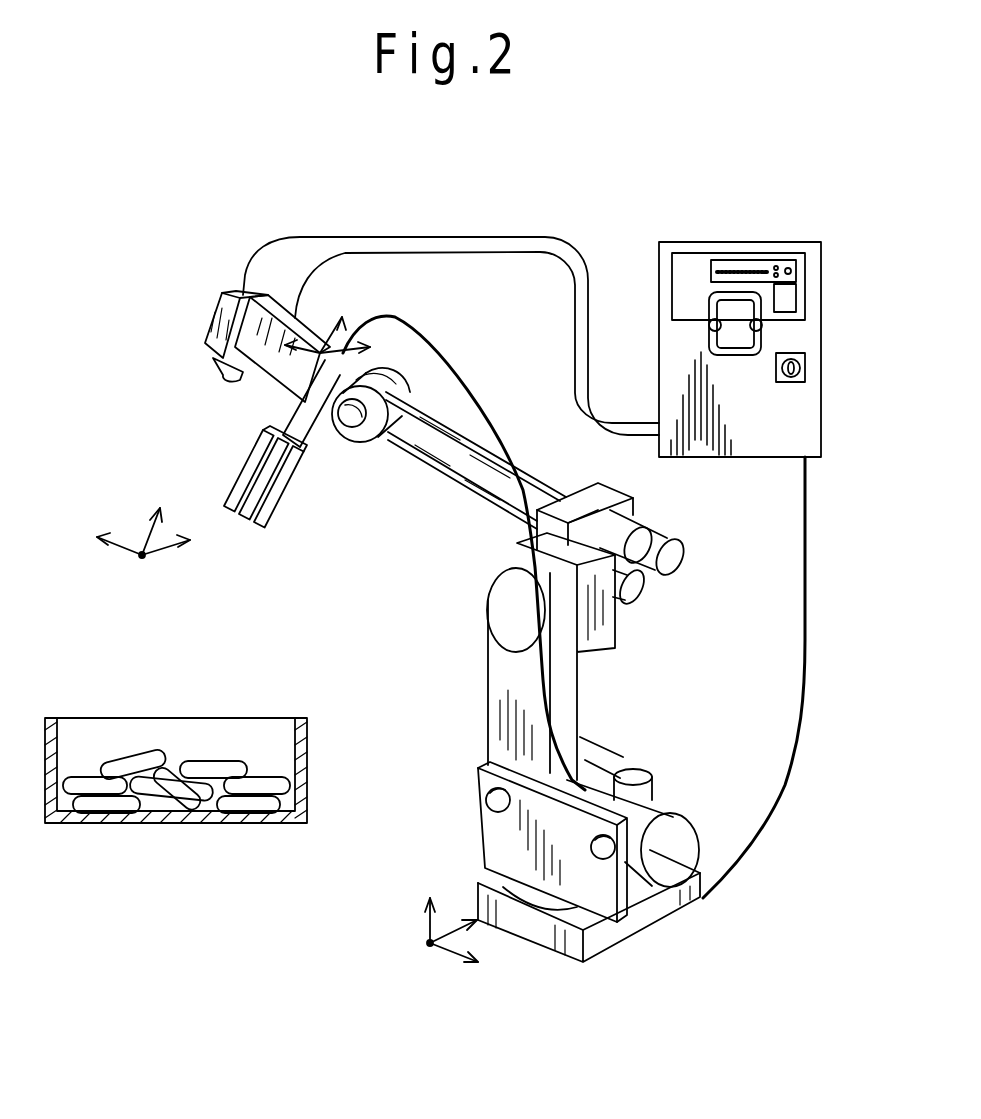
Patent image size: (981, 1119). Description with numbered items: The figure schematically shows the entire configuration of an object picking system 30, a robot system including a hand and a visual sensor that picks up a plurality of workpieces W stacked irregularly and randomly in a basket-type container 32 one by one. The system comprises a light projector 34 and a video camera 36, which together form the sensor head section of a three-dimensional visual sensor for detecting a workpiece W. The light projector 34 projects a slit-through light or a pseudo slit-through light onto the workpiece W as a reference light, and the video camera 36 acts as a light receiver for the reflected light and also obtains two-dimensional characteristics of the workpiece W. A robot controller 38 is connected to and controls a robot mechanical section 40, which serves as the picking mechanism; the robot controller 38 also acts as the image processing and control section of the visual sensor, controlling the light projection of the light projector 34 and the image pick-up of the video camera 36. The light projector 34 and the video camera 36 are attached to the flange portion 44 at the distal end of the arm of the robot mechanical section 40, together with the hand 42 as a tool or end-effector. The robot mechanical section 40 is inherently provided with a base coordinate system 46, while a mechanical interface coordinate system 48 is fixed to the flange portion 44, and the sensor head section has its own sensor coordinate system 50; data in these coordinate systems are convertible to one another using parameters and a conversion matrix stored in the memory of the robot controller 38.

The object picking system 30 is at (605, 200).
The basket-type container 32 is at (144, 828).
The light projector 34 is at (305, 318).
The video camera 36 is at (238, 293).
The robot controller 38 is at (822, 250).
The robot mechanical section 40 is at (516, 676).
The hand 42 is at (276, 513).
The flange portion 44 is at (325, 420).
The base coordinate system 46 is at (410, 956).
The mechanical interface coordinate system 48 is at (307, 363).
The sensor coordinate system 50 is at (120, 565).
The workpiece W is at (153, 756).